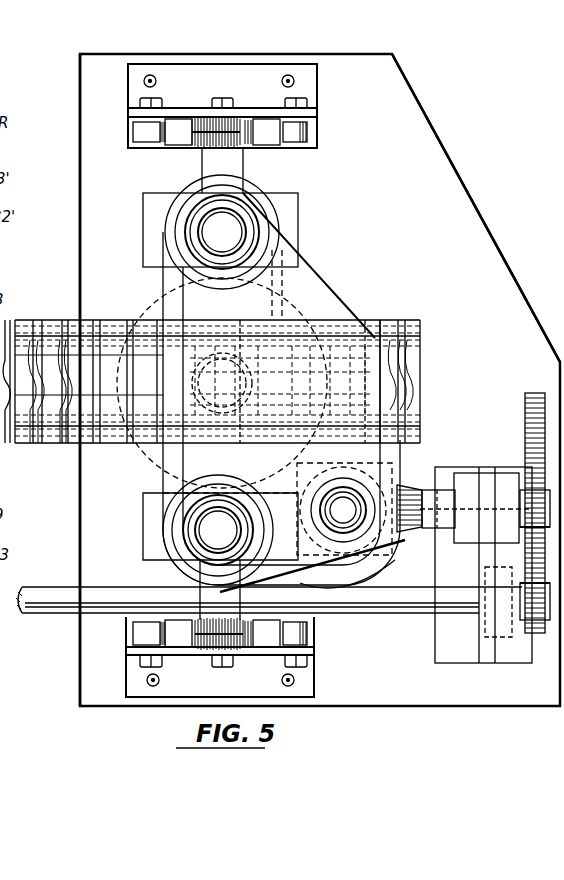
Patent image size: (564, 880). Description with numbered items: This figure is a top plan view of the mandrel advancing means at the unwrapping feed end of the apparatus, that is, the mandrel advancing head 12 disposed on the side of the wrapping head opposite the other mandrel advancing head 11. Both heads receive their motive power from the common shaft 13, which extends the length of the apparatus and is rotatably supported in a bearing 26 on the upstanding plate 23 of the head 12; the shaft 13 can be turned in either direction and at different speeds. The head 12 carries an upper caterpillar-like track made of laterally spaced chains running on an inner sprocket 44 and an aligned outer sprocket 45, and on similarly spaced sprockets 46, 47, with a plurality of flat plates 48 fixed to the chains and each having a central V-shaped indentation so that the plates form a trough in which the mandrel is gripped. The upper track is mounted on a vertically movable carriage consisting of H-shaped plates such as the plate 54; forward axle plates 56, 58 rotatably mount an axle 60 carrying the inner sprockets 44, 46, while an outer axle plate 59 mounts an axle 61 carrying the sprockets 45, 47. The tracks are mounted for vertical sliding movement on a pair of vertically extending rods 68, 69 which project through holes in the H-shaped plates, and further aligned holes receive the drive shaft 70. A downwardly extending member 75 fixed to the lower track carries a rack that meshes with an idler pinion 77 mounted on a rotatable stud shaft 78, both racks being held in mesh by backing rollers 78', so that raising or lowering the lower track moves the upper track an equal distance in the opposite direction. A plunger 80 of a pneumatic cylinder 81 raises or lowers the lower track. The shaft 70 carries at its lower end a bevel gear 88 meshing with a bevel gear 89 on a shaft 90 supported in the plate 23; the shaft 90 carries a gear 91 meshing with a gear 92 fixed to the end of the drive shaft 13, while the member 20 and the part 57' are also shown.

The mandrel advancing head 11 is at (5, 52).
The mandrel advancing head 12 is at (446, 130).
The common shaft 13 is at (44, 614).
The member 20 is at (12, 265).
The upstanding plate 23 is at (486, 475).
The bearing 26 is at (484, 636).
The inner sprocket 44 is at (38, 445).
The outer sprocket 45 is at (408, 420).
The inner sprocket 46 is at (50, 320).
The outer sprocket 47 is at (408, 337).
The flat plates 48 is at (96, 320).
The H-shaped plate 54 is at (163, 300).
The axle plate 56 is at (40, 447).
The chain 57' is at (258, 408).
The axle plate 58 is at (70, 320).
The axle plate 59 is at (240, 320).
The axle 60 is at (88, 446).
The axle 61 is at (352, 320).
The vertically extending rod 68 is at (220, 530).
The vertically extending rod 69 is at (220, 232).
The drive shaft 70 is at (344, 509).
The downwardly extending member 75 is at (203, 600).
The idler pinion 77 is at (208, 640).
The stud shaft 78 is at (223, 674).
The backing rollers 78' is at (224, 641).
The plunger 80 is at (248, 322).
The pneumatic cylinder 81 is at (292, 318).
The bevel gear 88 is at (408, 486).
The bevel gear 89 is at (355, 574).
The shaft 90 is at (440, 490).
The gear 91 is at (535, 393).
The gear 92 is at (538, 634).